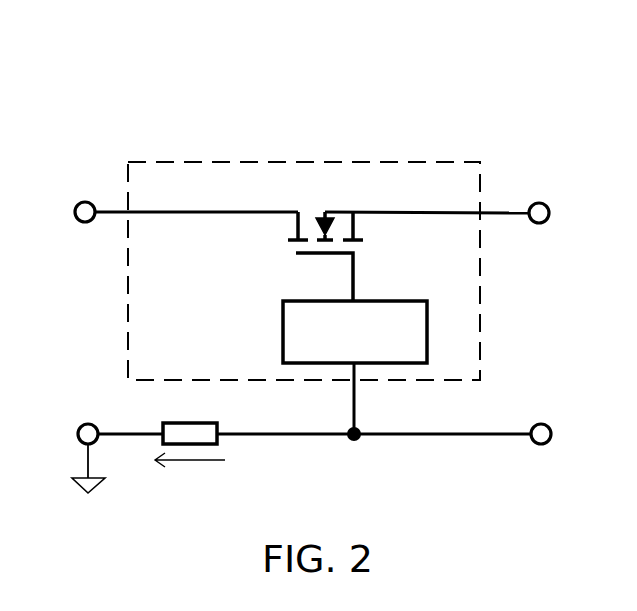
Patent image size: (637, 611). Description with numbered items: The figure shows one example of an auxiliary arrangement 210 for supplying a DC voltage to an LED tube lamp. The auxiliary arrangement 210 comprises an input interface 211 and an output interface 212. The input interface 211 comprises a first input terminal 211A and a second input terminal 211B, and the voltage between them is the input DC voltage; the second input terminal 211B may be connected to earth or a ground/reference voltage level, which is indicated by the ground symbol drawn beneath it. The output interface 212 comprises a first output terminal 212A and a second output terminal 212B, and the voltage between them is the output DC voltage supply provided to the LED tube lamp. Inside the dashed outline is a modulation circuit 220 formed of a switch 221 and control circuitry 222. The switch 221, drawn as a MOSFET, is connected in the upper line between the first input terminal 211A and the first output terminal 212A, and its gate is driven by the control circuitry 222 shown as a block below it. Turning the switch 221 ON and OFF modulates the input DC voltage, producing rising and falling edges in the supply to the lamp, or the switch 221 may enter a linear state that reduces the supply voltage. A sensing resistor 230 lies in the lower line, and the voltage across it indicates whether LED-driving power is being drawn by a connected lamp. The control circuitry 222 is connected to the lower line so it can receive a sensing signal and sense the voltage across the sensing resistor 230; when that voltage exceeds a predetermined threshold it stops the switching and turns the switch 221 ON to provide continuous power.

The auxiliary arrangement 210 is at (126, 95).
The input interface 211 is at (88, 186).
The first input terminal 211A is at (52, 224).
The second input terminal 211B is at (68, 438).
The output interface 212 is at (562, 168).
The first output terminal 212A is at (566, 228).
The second output terminal 212B is at (561, 417).
The modulation circuit 220 is at (415, 163).
The switch 221 is at (325, 235).
The control circuitry 222 is at (355, 332).
The sensing resistor 230 is at (190, 416).